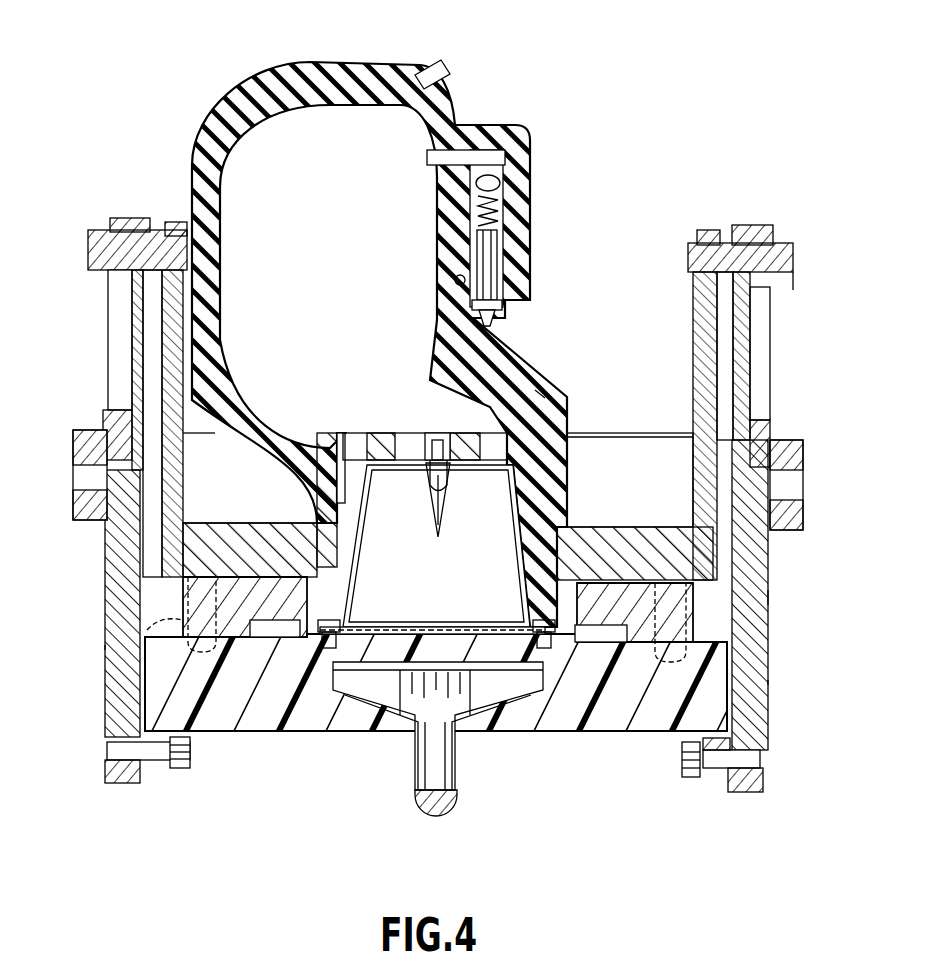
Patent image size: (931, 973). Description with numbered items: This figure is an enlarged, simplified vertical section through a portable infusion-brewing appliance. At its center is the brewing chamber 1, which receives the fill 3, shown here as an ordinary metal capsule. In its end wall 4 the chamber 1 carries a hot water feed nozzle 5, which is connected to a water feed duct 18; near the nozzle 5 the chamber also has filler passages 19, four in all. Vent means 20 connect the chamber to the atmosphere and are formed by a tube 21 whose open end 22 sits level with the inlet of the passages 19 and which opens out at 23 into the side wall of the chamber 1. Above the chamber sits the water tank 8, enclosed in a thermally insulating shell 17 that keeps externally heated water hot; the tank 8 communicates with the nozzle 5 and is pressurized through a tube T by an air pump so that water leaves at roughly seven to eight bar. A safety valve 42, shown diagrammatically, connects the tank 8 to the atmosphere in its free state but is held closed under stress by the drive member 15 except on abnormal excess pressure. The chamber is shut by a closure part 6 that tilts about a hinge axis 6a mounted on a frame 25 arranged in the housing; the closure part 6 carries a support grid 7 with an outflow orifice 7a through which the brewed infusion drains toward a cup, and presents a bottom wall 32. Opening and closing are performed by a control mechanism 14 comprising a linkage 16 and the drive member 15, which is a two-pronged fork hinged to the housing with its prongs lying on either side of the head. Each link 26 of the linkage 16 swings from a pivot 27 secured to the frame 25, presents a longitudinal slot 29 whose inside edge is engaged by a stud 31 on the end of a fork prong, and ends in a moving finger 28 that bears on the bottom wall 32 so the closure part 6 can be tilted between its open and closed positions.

The brewing chamber 1 is at (540, 390).
The fill 3 is at (540, 690).
The end wall 4 is at (572, 433).
The hot water feed nozzle 5 is at (448, 492).
The closure part 6 is at (258, 718).
The hinge axis 6a is at (106, 641).
The support grid 7 is at (356, 690).
The outflow orifice 7a is at (457, 778).
The water tank 8 is at (327, 182).
The control mechanism 14 is at (795, 292).
The drive member 15 is at (800, 518).
The linkage 16 is at (770, 598).
The thermally insulating shell 17 is at (222, 102).
The water feed duct 18 is at (432, 440).
The filler passage 19 is at (385, 445).
The vent means 20 is at (282, 449).
The tube 21 is at (300, 480).
The open end 22 is at (343, 440).
The opening 23 is at (312, 502).
The frame 25 is at (700, 555).
The link 26 is at (105, 604).
The pivot 27 is at (128, 245).
The moving finger 28 is at (180, 768).
The longitudinal slot 29 is at (120, 322).
The stud 31 is at (110, 428).
The bottom wall 32 is at (616, 735).
The safety valve 42 is at (505, 228).
The tube T is at (426, 70).